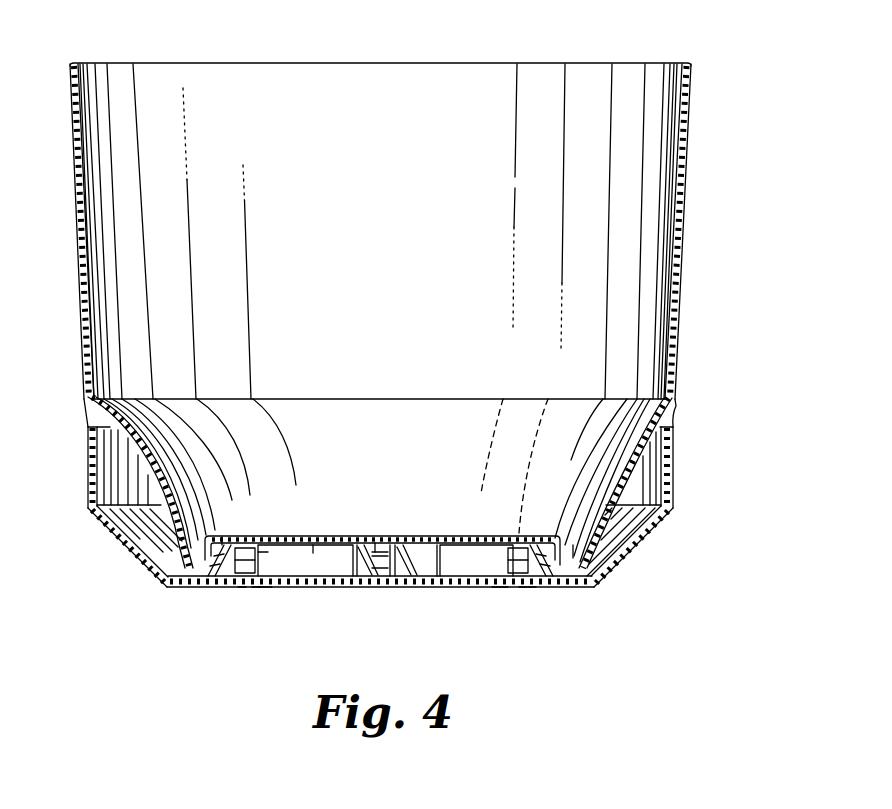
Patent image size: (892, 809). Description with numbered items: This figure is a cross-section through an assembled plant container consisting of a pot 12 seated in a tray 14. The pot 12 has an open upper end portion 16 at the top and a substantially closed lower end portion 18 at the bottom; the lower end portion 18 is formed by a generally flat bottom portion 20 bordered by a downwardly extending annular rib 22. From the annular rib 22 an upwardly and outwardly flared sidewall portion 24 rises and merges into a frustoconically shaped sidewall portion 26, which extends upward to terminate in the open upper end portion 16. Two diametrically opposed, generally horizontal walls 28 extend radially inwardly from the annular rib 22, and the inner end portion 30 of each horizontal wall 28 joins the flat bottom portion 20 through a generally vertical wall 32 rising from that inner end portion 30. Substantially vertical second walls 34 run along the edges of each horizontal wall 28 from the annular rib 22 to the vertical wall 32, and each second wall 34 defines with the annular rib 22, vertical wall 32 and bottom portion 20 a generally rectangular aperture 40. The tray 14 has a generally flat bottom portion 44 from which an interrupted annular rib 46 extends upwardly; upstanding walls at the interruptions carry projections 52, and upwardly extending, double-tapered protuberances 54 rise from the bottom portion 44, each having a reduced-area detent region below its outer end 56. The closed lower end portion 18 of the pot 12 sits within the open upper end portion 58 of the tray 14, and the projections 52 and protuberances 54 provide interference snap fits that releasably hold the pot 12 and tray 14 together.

The pot 12 is at (73, 137).
The tray 14 is at (89, 477).
The open upper end portion 16 is at (513, 64).
The lower end portion 18 is at (323, 537).
The flat bottom portion 20 is at (279, 537).
The annular rib 22 is at (197, 588).
The flared sidewall portion 24 is at (621, 473).
The frustoconically shaped sidewall portion 26 is at (680, 310).
The horizontal wall 28 is at (256, 588).
The inner end portion 30 is at (265, 586).
The vertical wall 32 is at (385, 560).
The second wall 34 is at (242, 588).
The aperture 40 is at (243, 542).
The flat bottom portion 44 is at (440, 543).
The annular rib 46 is at (313, 546).
The projection 52 is at (234, 540).
The protuberance 54 is at (223, 588).
The outer end 56 is at (222, 537).
The open upper end portion 58 is at (675, 427).